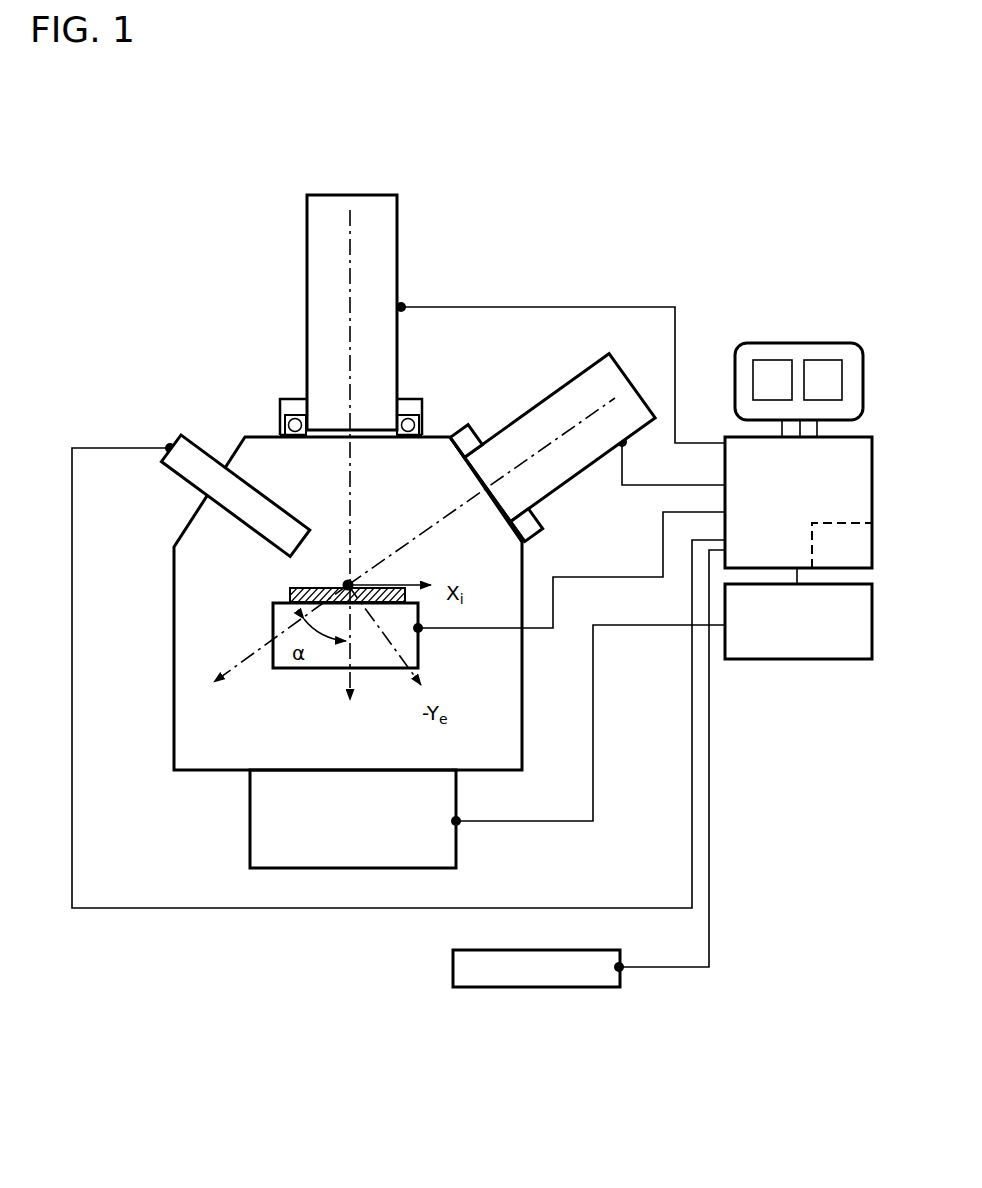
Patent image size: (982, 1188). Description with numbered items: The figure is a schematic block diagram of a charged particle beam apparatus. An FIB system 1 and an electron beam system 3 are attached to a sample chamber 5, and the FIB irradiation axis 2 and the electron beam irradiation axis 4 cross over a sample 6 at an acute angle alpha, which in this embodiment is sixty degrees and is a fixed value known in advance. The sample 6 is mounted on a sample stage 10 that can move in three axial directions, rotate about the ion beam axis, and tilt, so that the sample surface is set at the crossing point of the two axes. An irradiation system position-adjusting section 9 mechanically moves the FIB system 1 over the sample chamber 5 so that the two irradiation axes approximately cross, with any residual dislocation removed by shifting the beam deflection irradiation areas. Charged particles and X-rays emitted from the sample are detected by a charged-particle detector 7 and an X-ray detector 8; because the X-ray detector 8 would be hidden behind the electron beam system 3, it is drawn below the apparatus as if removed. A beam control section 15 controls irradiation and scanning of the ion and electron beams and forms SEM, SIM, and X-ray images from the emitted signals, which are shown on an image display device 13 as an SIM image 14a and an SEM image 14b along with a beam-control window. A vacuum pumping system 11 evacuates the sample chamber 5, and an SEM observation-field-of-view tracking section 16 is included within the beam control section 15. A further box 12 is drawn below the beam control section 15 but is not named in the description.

The FIB system 1 is at (398, 212).
The FIB irradiation axis 2 is at (351, 275).
The electron beam system 3 is at (552, 395).
The electron beam irradiation axis 4 is at (540, 452).
The sample chamber 5 is at (173, 690).
The sample 6 is at (290, 590).
The charged-particle detector 7 is at (175, 473).
The X-ray detector 8 is at (495, 988).
The irradiation system position-adjusting section 9 is at (285, 399).
The sample stage 10 is at (418, 656).
The vacuum pumping system 11 is at (456, 857).
The storage unit 12 is at (768, 660).
The image display device 13 is at (760, 343).
The SIM image 14a is at (778, 360).
The SEM image 14b is at (830, 360).
The beam control section 15 is at (742, 435).
The SEM observation-field-of-view tracking section 16 is at (848, 523).